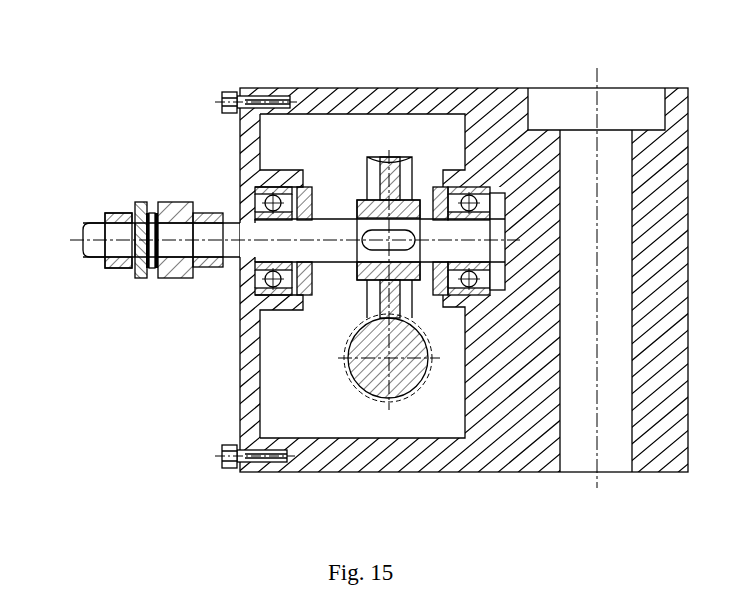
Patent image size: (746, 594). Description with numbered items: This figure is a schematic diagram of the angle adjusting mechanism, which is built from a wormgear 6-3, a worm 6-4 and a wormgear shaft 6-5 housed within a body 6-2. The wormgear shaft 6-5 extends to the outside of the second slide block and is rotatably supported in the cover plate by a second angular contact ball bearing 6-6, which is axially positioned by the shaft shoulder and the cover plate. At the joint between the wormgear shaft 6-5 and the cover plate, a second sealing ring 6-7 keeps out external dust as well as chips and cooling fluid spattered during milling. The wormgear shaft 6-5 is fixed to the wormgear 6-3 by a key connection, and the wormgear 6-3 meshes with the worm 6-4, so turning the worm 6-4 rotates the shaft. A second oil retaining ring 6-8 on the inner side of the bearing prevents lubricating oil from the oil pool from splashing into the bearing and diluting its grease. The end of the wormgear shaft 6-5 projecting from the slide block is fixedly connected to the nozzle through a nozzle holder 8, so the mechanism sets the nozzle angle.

The nozzle holder 8 is at (120, 235).
The housing 6-2 is at (392, 100).
The wormgear 6-3 is at (412, 280).
The worm 6-4 is at (417, 388).
The wormgear shaft 6-5 is at (191, 205).
The second angular contact ball bearing 6-6 is at (240, 217).
The second sealing ring 6-7 is at (213, 230).
The second oil retaining ring 6-8 is at (452, 195).